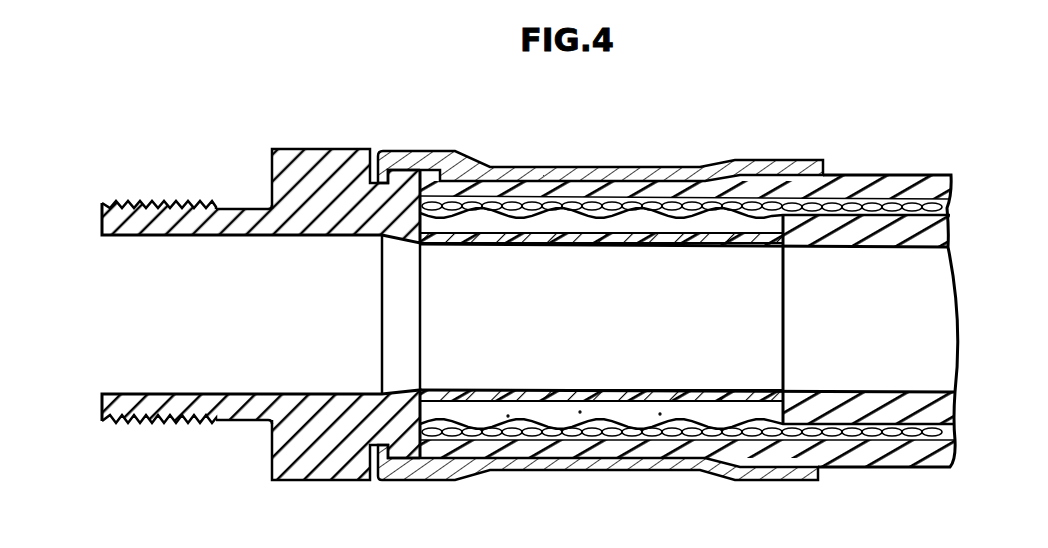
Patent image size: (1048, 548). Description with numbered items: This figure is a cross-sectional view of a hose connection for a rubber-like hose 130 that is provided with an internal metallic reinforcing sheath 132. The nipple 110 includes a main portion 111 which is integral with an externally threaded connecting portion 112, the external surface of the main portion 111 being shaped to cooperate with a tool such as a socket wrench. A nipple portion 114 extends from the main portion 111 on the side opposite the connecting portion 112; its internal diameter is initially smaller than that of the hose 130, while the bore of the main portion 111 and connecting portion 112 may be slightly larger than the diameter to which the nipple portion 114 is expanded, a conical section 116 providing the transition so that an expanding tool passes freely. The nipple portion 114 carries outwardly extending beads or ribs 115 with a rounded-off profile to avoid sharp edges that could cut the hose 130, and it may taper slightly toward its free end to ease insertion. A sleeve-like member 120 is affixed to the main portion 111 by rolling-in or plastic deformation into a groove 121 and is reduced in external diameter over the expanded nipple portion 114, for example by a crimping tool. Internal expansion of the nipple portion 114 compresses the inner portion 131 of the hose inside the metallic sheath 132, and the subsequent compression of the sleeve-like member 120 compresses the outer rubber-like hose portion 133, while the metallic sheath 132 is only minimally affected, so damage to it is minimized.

The nipple 110 is at (261, 272).
The main portion 111 is at (275, 157).
The externally threaded connecting portion 112 is at (166, 202).
The nipple portion 114 is at (580, 410).
The beads or ribs 115 is at (508, 415).
The conical section 116 is at (382, 346).
The sleeve-like member 120 is at (612, 284).
The groove 121 is at (421, 152).
The hose 130 is at (721, 295).
The inner portion of the hose 131 is at (952, 233).
The metallic reinforcing sheath 132 is at (953, 428).
The outer rubber-like hose portion 133 is at (955, 178).